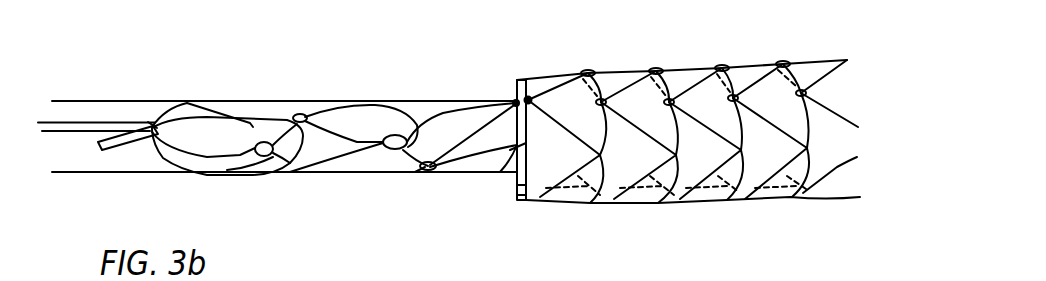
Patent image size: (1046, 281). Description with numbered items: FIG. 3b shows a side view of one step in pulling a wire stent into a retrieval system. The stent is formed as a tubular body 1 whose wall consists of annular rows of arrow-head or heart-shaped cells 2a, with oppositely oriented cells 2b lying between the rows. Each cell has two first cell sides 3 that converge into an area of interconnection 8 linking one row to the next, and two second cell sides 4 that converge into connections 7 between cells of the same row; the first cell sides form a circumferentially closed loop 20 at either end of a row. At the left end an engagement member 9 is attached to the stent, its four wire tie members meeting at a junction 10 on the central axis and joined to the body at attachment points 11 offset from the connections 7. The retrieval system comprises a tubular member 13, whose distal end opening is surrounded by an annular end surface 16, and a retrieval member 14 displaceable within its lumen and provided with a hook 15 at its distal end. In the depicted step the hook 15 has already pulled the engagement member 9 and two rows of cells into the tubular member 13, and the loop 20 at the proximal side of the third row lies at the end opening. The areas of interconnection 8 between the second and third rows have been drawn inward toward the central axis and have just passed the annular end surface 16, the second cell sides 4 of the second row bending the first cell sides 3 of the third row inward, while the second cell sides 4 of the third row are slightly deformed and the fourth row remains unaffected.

The tubular body 1 is at (777, 52).
The cells 2a is at (260, 125).
The cells 2b is at (378, 126).
The first cell sides 3 is at (523, 200).
The second cell sides 4 is at (532, 200).
The connections 7 is at (304, 114).
The area of interconnection 8 is at (400, 150).
The engagement member 9 is at (167, 100).
The junction 10 is at (148, 122).
The attachment points 11 is at (281, 136).
The tubular member 13 is at (352, 98).
The retrieval member 14 is at (70, 127).
The hook 15 is at (112, 145).
The annular end surface 16 is at (513, 102).
The loop 20 is at (515, 203).